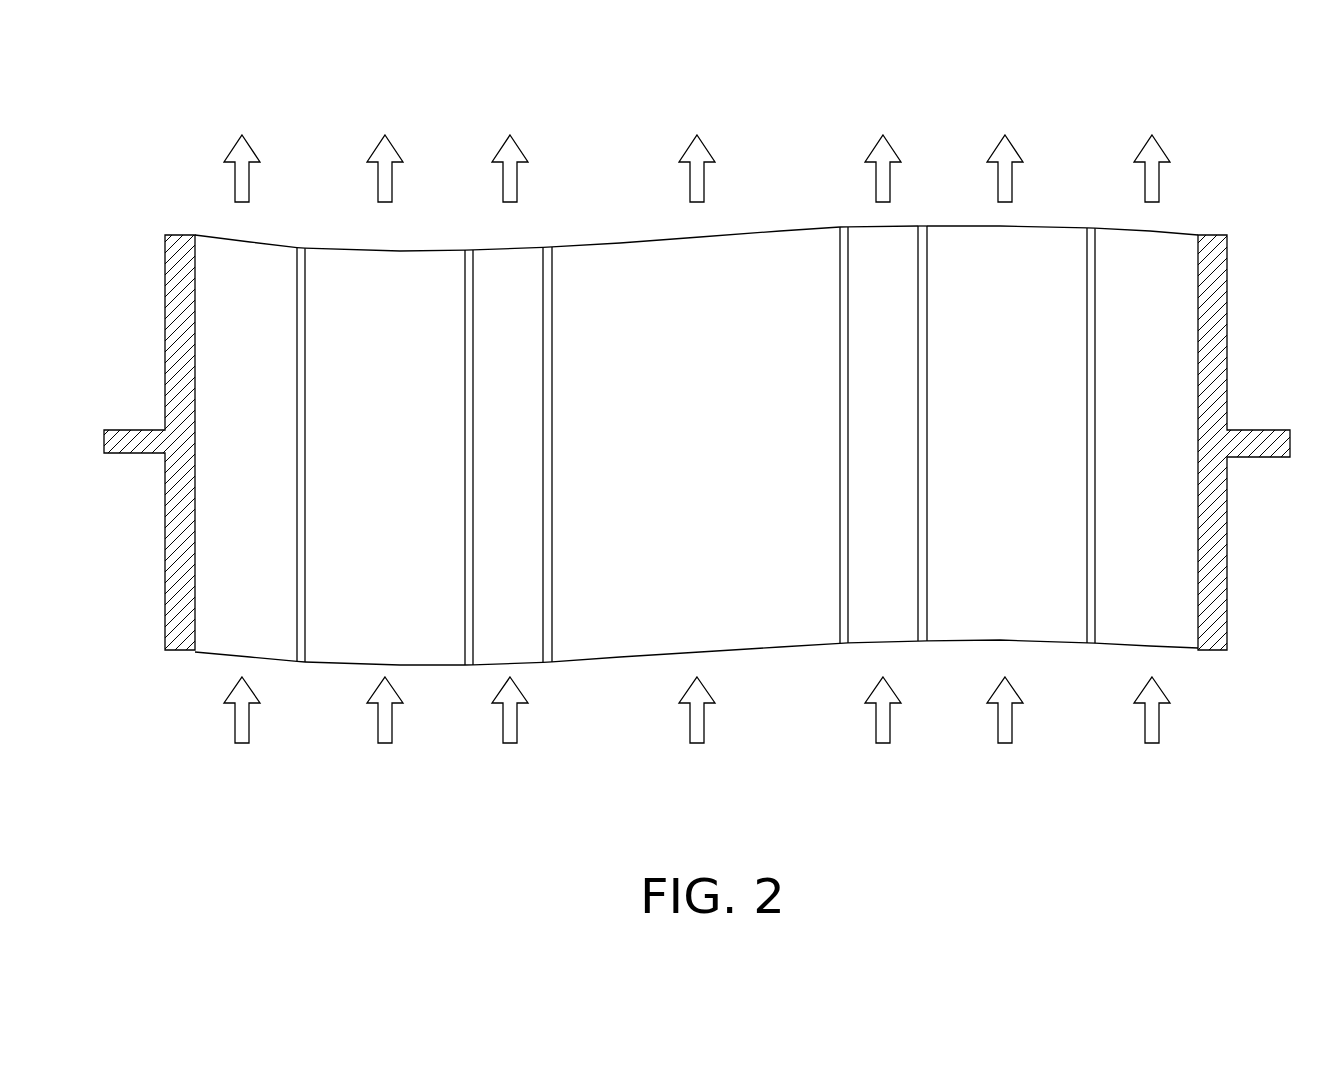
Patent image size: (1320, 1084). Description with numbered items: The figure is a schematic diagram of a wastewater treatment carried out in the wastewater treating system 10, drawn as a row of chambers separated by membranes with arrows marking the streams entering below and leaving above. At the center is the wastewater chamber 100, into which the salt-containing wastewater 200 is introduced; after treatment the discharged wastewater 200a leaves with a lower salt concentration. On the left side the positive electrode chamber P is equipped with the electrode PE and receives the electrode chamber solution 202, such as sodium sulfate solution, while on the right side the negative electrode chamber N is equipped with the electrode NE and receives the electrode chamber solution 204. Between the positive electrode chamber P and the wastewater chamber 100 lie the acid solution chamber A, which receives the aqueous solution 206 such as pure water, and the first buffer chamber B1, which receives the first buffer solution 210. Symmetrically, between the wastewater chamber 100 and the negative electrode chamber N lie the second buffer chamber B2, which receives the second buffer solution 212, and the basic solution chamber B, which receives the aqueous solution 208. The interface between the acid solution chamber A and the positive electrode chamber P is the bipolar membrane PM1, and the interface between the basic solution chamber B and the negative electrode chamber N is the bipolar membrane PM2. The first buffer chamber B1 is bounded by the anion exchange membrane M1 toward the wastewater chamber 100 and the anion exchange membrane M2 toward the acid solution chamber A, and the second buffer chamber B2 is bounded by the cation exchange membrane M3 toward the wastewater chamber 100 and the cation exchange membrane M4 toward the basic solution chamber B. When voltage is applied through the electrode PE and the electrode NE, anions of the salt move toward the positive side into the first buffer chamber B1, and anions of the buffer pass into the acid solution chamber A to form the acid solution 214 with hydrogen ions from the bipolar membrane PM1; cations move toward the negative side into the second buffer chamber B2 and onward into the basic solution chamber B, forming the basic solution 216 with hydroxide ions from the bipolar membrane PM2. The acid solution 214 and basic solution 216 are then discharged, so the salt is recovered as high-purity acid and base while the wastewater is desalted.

The wastewater treating system 10 is at (1262, 254).
The wastewater chamber 100 is at (710, 461).
The wastewater 200 is at (698, 743).
The discharged wastewater 200a is at (693, 152).
The electrode chamber solution 202 is at (238, 152).
The electrode chamber solution 204 is at (1156, 152).
The aqueous solution 206 is at (386, 743).
The aqueous solution 208 is at (1006, 743).
The first buffer solution 210 is at (506, 152).
The second buffer solution 212 is at (886, 152).
The acid solution 214 is at (381, 152).
The basic solution 216 is at (1009, 152).
The electrode PE is at (176, 563).
The electrode NE is at (1225, 562).
The positive electrode chamber P is at (255, 461).
The negative electrode chamber N is at (1157, 461).
The acid solution chamber A is at (396, 461).
The basic solution chamber B is at (1017, 461).
The first buffer chamber B1 is at (529, 461).
The second buffer chamber B2 is at (904, 461).
The bipolar membrane PM1 is at (300, 247).
The bipolar membrane PM2 is at (1090, 227).
The anion exchange membrane M1 is at (548, 246).
The anion exchange membrane M2 is at (469, 249).
The cation exchange membrane M3 is at (843, 226).
The cation exchange membrane M4 is at (922, 226).